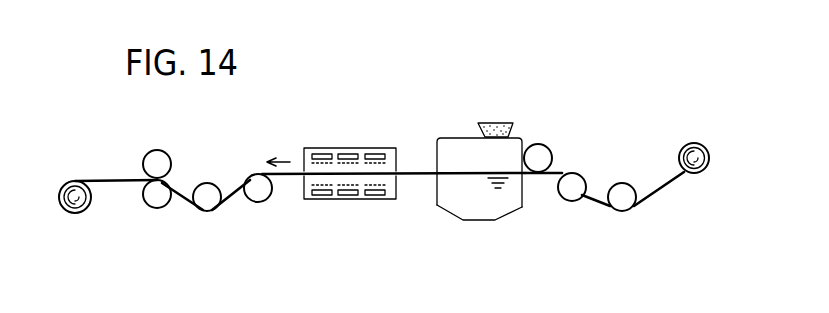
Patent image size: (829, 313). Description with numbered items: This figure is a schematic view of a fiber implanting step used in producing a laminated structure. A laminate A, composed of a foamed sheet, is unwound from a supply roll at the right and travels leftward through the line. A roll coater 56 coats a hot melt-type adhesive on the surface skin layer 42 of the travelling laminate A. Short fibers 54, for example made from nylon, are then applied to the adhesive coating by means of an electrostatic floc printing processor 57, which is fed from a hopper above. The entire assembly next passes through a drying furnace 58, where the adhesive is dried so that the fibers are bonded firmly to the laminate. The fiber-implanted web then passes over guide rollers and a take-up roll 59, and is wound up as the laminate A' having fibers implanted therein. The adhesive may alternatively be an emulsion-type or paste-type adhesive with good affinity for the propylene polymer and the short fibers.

The laminate A is at (696, 137).
The laminate having fibers implanted therein A' is at (72, 179).
The surface skin layer 42 is at (570, 168).
The short fibers 54 is at (492, 122).
The roll coater 56 is at (545, 147).
The electrostatic floc printing processor 57 is at (498, 191).
The drying furnace 58 is at (325, 158).
The take-up roll 59 is at (157, 150).